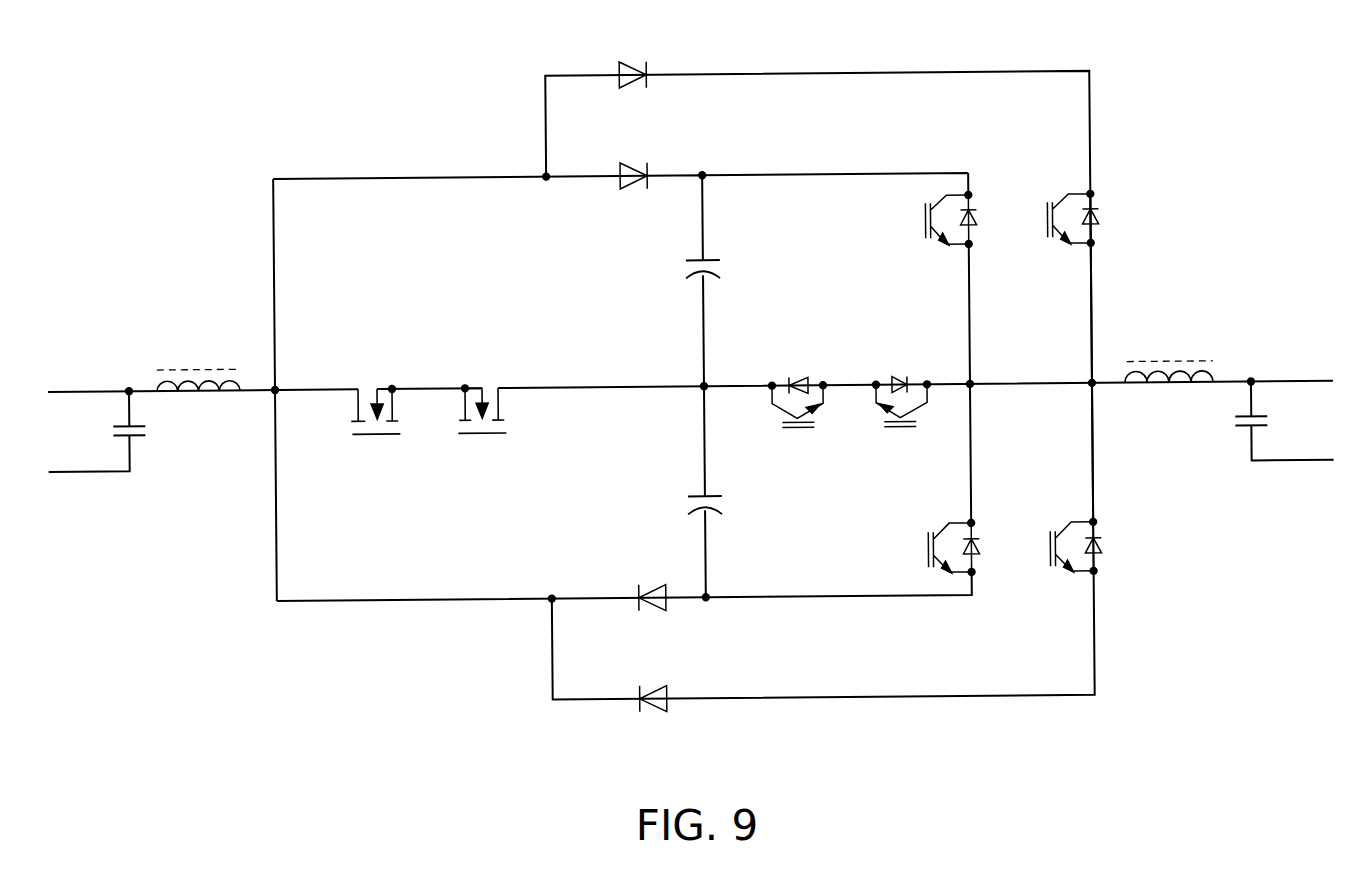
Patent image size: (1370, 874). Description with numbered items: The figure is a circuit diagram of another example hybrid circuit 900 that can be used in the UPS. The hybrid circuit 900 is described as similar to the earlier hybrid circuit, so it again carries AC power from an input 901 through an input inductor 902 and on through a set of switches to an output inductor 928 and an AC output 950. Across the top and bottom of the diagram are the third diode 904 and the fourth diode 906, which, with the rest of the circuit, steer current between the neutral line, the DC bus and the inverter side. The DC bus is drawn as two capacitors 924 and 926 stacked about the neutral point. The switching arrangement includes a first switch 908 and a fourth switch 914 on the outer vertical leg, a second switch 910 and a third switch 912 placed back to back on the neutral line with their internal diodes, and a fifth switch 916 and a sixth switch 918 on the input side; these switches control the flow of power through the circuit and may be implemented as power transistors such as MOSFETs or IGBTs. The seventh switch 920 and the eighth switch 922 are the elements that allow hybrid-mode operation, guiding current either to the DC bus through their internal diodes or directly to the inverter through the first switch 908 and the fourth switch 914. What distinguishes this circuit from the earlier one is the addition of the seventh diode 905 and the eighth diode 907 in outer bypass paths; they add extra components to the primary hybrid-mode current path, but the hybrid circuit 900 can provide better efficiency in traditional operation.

The hybrid circuit 900 is at (1197, 156).
The AC input 901 is at (65, 381).
The input inductor 902 is at (175, 364).
The diode D3 904 is at (638, 163).
The diode D7 905 is at (638, 63).
The diode D4 906 is at (648, 615).
The diode D8 907 is at (665, 723).
The switch S1 908 is at (1103, 222).
The diode of switch S2 910 is at (897, 385).
The diode of switch S3 912 is at (800, 385).
The switch S4 914 is at (1103, 555).
The switch S5 916 is at (377, 466).
The switch S6 918 is at (483, 466).
The switch S7 920 is at (975, 211).
The switch S8 922 is at (978, 571).
The upper DC link capacitor 924 is at (708, 259).
The lower DC link capacitor 926 is at (718, 521).
The output inductor 928 is at (1170, 363).
The AC output 950 is at (1285, 386).